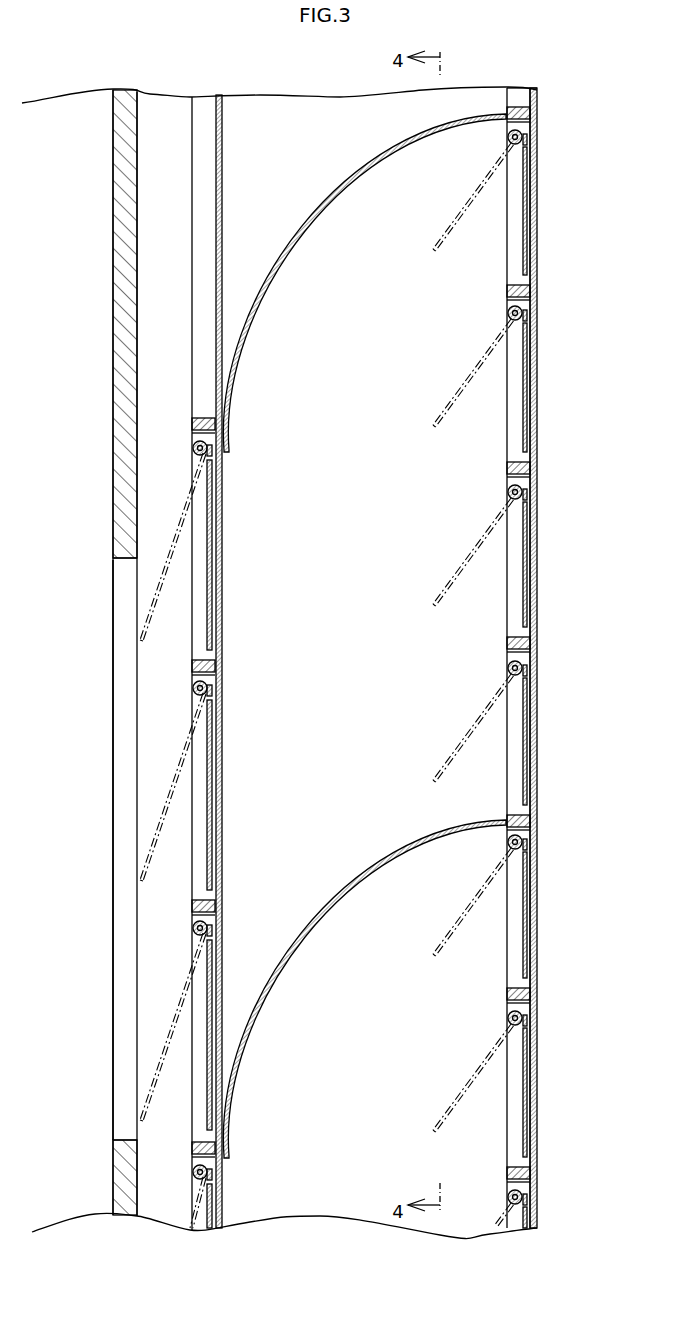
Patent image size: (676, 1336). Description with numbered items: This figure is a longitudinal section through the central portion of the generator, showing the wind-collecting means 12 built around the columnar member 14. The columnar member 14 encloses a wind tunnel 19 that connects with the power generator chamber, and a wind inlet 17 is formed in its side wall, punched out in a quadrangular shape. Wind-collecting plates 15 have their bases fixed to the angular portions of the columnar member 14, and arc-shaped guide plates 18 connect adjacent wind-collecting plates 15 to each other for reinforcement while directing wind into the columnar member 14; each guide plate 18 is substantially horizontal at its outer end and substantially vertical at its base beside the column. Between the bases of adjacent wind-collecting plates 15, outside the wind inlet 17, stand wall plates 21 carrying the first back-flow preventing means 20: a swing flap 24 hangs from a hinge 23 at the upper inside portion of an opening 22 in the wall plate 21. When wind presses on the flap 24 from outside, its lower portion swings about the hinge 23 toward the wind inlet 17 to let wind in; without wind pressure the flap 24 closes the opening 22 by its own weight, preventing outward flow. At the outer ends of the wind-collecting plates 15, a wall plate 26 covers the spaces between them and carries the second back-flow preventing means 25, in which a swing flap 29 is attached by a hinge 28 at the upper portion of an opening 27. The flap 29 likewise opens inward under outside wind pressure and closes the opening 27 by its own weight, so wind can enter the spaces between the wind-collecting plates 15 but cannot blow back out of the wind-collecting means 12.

The wind-collecting means 12 is at (300, 55).
The columnar member 14 is at (122, 388).
The wind-collecting plate 15 is at (488, 100).
The wind inlet 17 is at (114, 660).
The guide plate 18 is at (343, 188).
The wind tunnel 19 is at (72, 100).
The first back-flow preventing means 20 is at (236, 767).
The wall plate 21 is at (216, 668).
The opening 22 is at (223, 510).
The hinge 23 is at (195, 446).
The swing flap 24 is at (208, 630).
The second back-flow preventing means 25 is at (552, 462).
The wall plate 26 is at (536, 310).
The opening 27 is at (534, 605).
The hinge 28 is at (507, 315).
The swing flap 29 is at (523, 440).